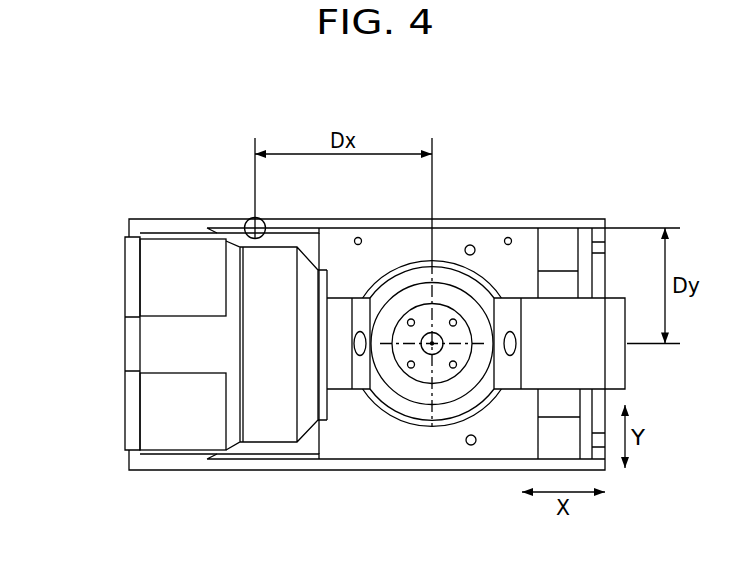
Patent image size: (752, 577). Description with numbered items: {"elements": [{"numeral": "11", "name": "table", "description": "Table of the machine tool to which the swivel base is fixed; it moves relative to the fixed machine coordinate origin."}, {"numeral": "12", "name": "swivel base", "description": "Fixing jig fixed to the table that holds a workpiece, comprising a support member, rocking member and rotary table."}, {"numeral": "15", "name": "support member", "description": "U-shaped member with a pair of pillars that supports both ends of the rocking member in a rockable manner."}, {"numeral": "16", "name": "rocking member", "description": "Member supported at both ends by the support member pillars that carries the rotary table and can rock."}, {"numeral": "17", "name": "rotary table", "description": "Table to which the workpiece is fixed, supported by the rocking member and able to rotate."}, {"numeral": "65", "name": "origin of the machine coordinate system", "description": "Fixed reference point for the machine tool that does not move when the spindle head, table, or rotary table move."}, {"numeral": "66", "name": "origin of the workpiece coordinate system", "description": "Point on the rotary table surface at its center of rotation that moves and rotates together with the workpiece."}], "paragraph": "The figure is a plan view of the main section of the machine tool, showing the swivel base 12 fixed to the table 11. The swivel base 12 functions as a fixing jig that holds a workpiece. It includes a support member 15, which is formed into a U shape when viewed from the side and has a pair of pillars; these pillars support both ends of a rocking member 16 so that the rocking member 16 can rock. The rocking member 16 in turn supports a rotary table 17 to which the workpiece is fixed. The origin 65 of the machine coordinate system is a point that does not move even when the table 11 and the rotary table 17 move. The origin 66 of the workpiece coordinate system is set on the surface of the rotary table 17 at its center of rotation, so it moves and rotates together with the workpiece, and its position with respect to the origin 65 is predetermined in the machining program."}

The base 11 is at (146, 462).
The drive unit 12 is at (121, 256).
The arm 15 is at (158, 419).
The rotary ring 16 is at (408, 408).
The hub 17 is at (443, 368).
The reference mark 65 is at (252, 220).
The rotation center 66 is at (434, 338).